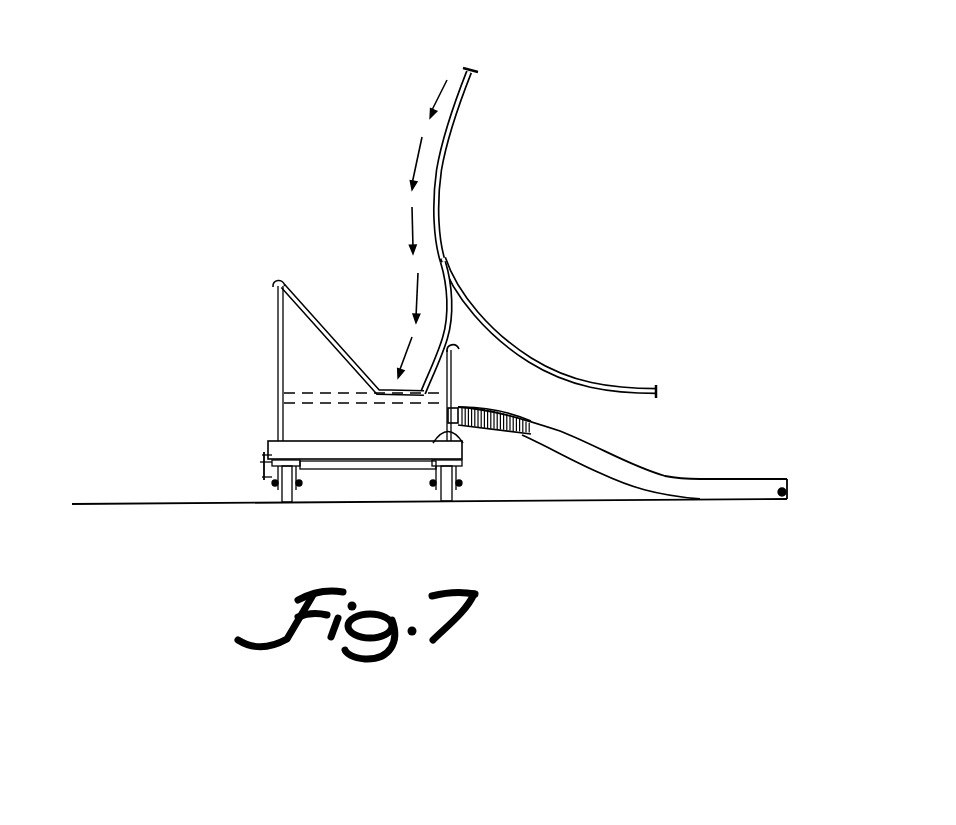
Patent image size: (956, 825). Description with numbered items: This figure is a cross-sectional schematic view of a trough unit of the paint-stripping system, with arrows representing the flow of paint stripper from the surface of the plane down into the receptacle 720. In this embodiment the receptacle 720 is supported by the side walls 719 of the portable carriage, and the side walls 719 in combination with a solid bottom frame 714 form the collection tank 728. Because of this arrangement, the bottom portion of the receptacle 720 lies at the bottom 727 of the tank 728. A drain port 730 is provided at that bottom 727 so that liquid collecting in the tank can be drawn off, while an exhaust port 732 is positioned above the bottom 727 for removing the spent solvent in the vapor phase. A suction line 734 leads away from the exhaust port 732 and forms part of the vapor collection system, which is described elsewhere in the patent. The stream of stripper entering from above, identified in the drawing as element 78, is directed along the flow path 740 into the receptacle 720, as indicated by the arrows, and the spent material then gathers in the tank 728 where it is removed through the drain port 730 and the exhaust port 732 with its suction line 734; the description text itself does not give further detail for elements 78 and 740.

The delivery pipe 78 is at (465, 72).
The pipe discharge section 740 is at (438, 260).
The receptacle 720 is at (327, 268).
The side walls 719 is at (278, 383).
The collection tank 728 is at (300, 418).
The solid bottom frame 714 is at (268, 447).
The drain port 730 is at (262, 477).
The bottom 727 is at (463, 441).
The exhaust port 732 is at (458, 405).
The suction line 734 is at (653, 437).